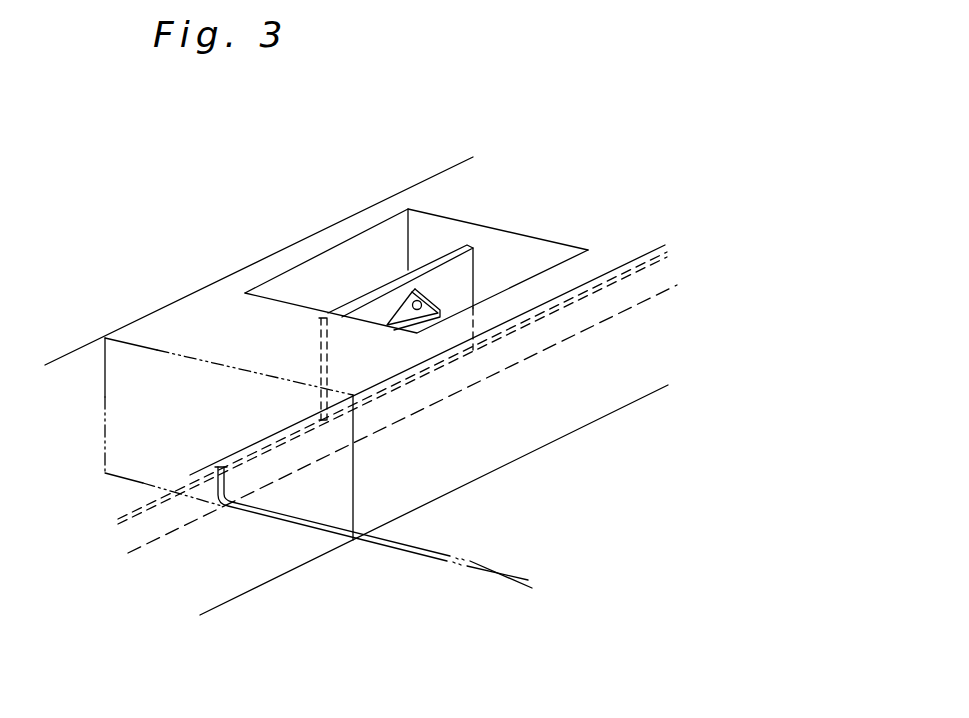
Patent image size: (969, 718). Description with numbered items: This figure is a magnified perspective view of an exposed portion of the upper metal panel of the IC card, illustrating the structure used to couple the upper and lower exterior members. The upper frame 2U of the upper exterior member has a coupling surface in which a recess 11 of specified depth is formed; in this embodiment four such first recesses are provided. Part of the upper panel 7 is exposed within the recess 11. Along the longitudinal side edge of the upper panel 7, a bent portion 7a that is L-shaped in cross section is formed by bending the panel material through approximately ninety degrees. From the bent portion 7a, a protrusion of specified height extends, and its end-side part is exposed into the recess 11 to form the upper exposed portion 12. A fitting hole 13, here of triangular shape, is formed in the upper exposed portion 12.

The upper frame 2U is at (193, 305).
The first recess 11 is at (373, 250).
The upper exposed portion 12 is at (443, 250).
The fitting hole 13 is at (441, 304).
The bent portion 7a is at (138, 508).
The upper panel 7 is at (542, 529).